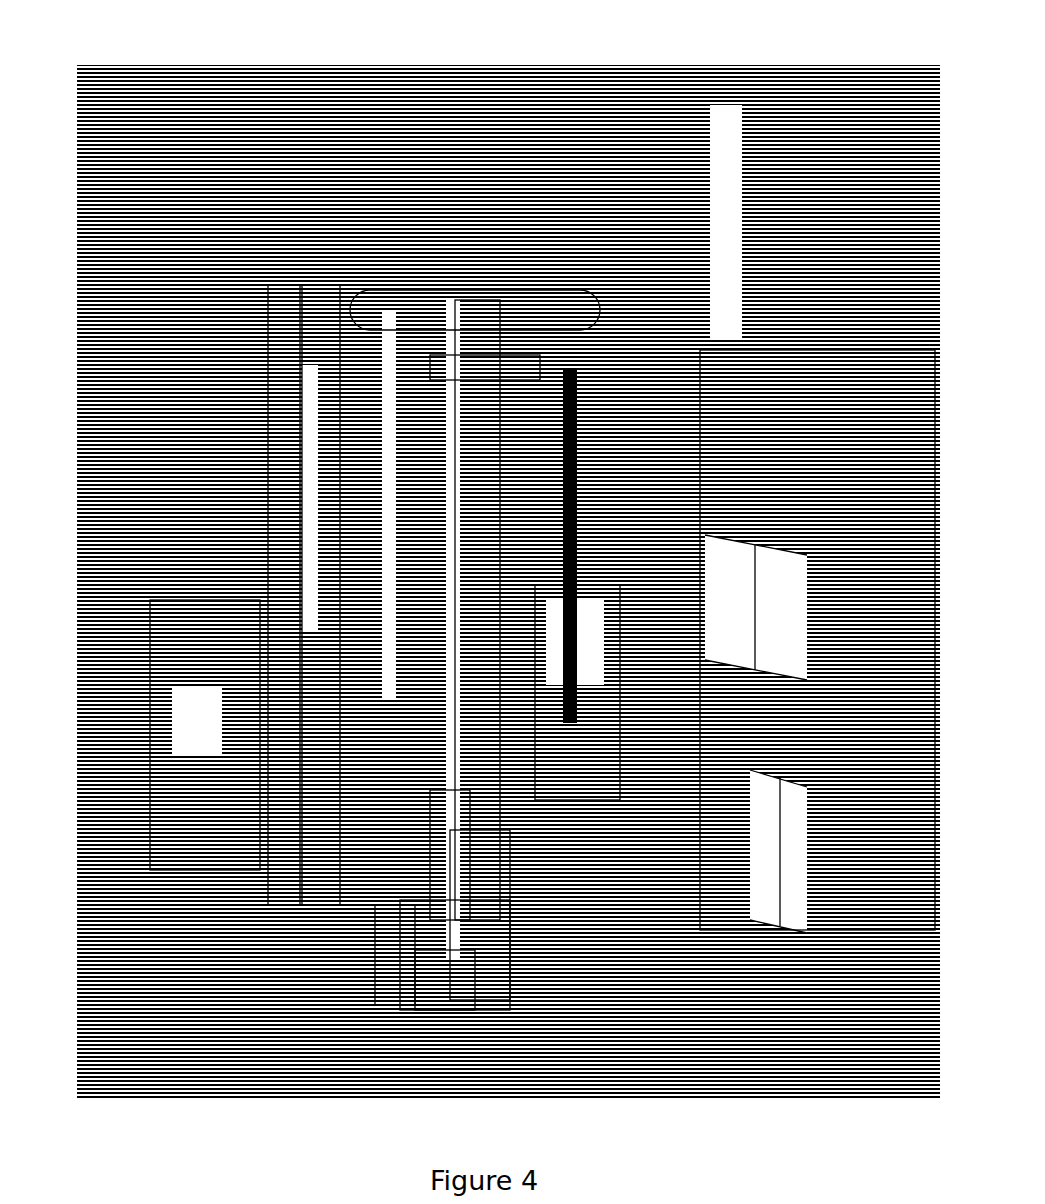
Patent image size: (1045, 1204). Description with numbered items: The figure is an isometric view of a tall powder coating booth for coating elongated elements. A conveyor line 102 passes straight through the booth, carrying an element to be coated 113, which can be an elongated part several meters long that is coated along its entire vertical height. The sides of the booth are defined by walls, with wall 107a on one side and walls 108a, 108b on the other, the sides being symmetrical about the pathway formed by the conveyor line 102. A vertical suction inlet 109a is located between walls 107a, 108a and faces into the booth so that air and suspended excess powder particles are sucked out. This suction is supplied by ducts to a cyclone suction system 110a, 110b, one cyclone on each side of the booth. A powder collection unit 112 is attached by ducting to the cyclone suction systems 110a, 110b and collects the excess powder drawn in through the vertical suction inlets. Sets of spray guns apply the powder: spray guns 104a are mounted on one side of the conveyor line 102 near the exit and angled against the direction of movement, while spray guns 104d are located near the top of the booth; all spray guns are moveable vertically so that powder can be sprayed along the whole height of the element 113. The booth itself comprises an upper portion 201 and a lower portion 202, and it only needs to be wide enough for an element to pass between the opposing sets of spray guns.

The conveyor line 102 is at (548, 322).
The spray guns 104a is at (387, 923).
The spray guns 104d is at (530, 377).
The wall 107a is at (322, 400).
The wall 108a is at (433, 965).
The wall 108b is at (457, 842).
The vertical suction inlet 109a is at (312, 340).
The cyclone suction system 110a is at (183, 712).
The cyclone suction system 110b is at (602, 667).
The powder collection unit 112 is at (836, 596).
The element to be coated 113 is at (440, 920).
The upper portion 201 is at (463, 522).
The lower portion 202 is at (440, 807).